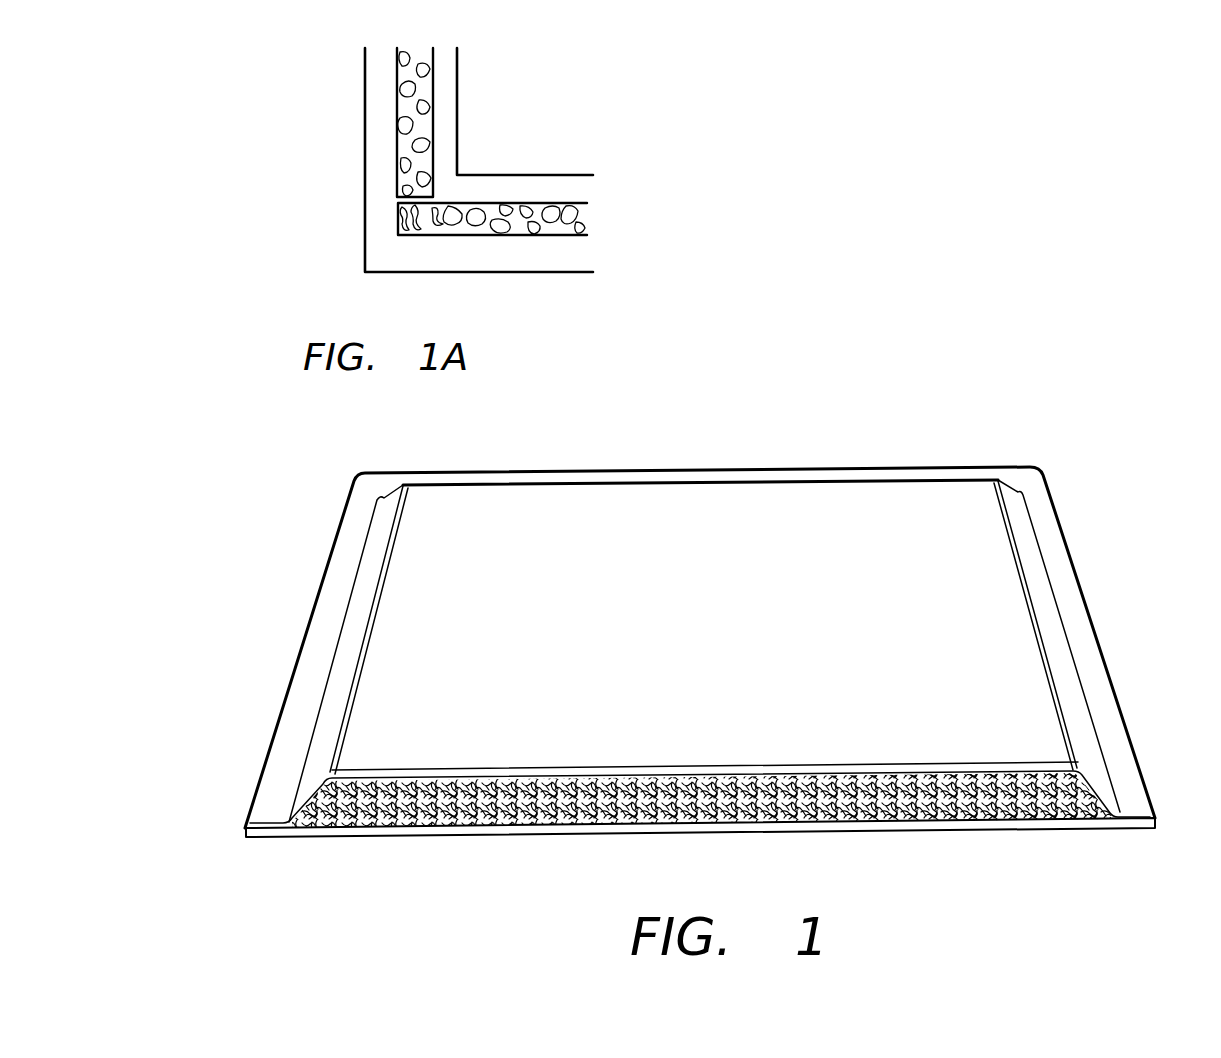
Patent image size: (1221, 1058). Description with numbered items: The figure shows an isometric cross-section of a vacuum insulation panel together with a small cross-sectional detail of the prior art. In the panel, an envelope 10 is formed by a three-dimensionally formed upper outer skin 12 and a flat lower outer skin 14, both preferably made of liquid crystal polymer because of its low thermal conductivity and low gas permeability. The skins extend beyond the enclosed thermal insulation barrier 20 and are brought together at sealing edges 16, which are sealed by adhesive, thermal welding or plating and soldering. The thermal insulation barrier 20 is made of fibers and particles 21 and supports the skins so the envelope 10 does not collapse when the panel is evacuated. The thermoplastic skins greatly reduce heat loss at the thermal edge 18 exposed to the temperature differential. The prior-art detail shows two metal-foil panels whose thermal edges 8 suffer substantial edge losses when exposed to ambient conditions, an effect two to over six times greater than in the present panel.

In FIG. 1A, the thermal edge 8 is at (415, 190).
In FIG. 1, the envelope 10 is at (697, 538).
In FIG. 1, the upper outer skin 12 is at (1000, 668).
In FIG. 1, the lower outer skin 14 is at (838, 830).
In FIG. 1, the sealing edge 16 is at (322, 645).
In FIG. 1, the thermal edge 18 is at (332, 688).
In FIG. 1, the thermal insulation barrier 20 is at (530, 831).
In FIG. 1, the fibers and particles 21 is at (508, 772).